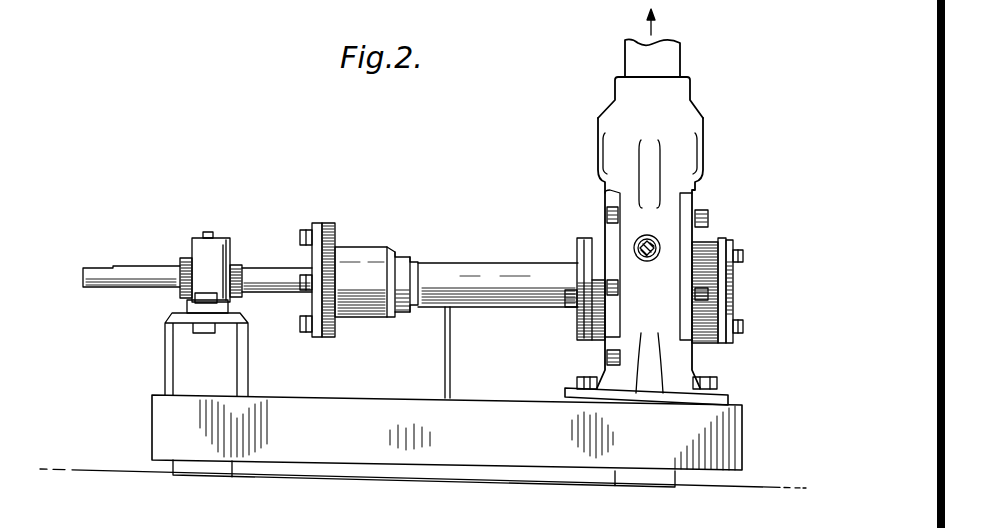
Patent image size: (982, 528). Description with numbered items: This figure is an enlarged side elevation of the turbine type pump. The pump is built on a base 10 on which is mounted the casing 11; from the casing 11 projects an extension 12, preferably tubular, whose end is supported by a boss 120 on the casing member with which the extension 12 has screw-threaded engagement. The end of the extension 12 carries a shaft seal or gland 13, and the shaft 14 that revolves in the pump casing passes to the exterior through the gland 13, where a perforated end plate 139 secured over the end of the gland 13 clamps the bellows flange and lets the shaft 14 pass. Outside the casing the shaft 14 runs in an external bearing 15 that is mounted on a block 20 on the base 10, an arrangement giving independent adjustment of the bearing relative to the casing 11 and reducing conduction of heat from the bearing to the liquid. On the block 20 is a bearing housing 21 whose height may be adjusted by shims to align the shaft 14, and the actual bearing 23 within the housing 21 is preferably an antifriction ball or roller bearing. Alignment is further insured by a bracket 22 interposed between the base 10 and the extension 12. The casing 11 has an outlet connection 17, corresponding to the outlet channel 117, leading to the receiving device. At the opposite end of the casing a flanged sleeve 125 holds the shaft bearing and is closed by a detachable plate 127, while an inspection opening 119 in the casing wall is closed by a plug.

The base 10 is at (720, 438).
The casing 11 is at (665, 225).
The extension 12 is at (475, 263).
The shaft seal or gland 13 is at (360, 247).
The shaft 14 is at (130, 264).
The external bearing 15 is at (222, 238).
The outlet connection 17 is at (625, 52).
The block 20 is at (247, 368).
The bearing housing 21 is at (230, 253).
The bracket 22 is at (451, 350).
The bearing 23 is at (240, 265).
The outlet channel 117 is at (687, 100).
The inspection opening 119 is at (662, 243).
The boss 120 is at (583, 236).
The flanged sleeve 125 is at (736, 251).
The detachable plate 127 is at (735, 296).
The perforated end plate 139 is at (315, 223).